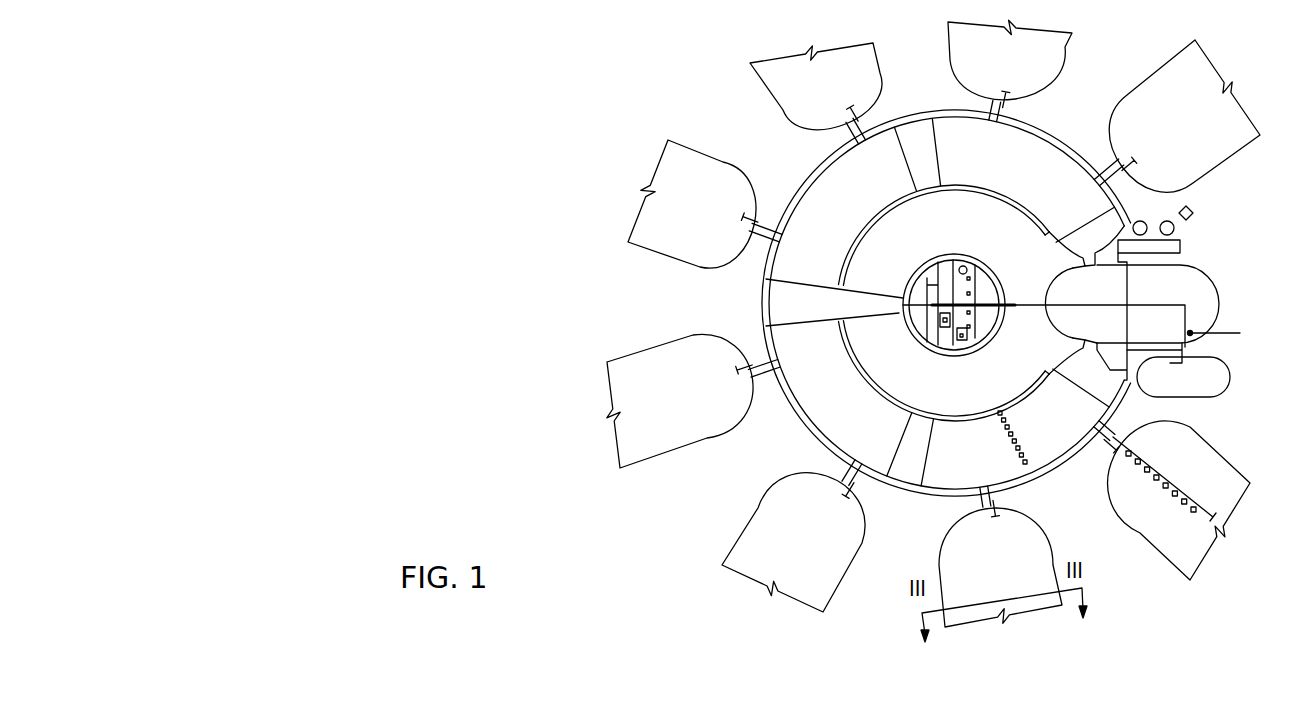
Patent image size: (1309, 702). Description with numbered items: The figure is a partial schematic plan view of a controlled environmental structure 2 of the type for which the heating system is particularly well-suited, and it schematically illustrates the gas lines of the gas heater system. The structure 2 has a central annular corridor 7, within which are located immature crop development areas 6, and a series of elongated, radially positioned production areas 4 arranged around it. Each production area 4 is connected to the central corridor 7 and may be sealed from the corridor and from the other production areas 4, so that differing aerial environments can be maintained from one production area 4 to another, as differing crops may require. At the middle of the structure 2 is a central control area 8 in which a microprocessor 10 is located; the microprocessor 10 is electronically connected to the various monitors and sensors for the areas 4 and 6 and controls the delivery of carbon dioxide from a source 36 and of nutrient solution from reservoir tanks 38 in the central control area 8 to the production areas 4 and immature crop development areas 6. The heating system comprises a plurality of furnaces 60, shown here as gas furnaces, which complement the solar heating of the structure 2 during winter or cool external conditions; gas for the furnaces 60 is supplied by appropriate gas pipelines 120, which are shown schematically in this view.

The structure 2 is at (1216, 200).
The production area 4 is at (683, 411).
The immature crop development area 6 is at (861, 195).
The central annular corridor 7 is at (800, 308).
The central control area 8 is at (944, 270).
The microprocessor 10 is at (962, 342).
The carbon dioxide source 36 is at (963, 268).
The nutrient reservoir tanks 38 is at (942, 313).
The furnaces 60 is at (1177, 497).
The gas pipelines 120 is at (1143, 393).